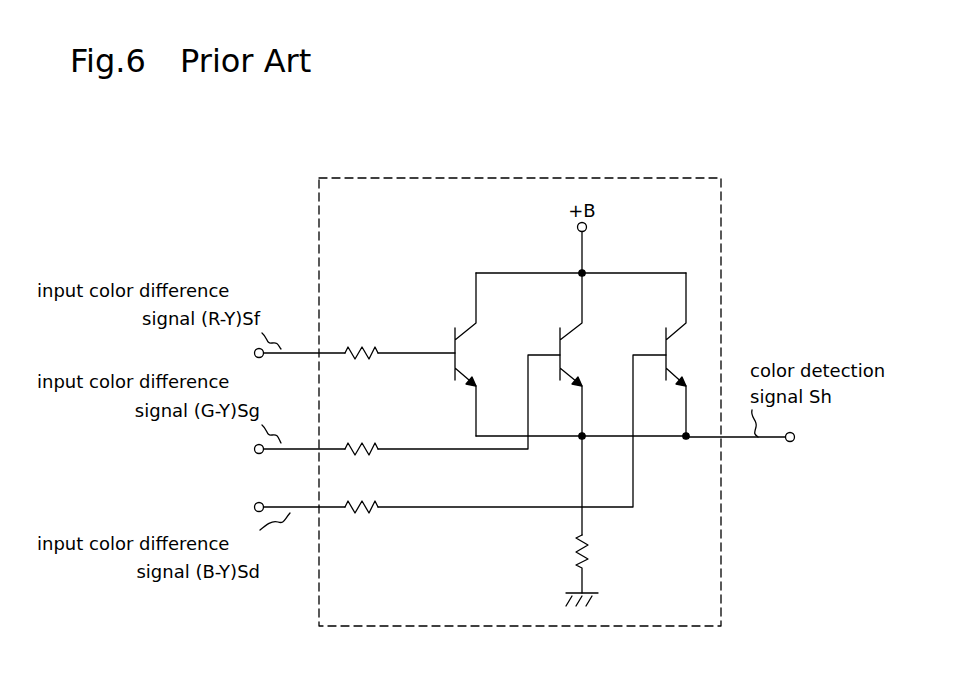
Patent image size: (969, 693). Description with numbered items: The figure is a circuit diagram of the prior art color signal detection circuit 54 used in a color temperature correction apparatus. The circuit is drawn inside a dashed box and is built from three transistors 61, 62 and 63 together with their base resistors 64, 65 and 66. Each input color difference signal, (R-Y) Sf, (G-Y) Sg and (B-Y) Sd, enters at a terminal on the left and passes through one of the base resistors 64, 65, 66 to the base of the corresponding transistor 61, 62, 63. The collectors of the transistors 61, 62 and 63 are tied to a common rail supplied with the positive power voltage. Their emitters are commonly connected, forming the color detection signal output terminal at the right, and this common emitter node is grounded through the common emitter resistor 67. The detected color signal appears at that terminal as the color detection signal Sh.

The color signal detection circuit 54 is at (378, 178).
The transistor 61 is at (464, 325).
The transistor 62 is at (570, 325).
The transistor 63 is at (675, 325).
The base resistor 64 is at (369, 343).
The base resistor 65 is at (369, 441).
The base resistor 66 is at (360, 516).
The common emitter resistor 67 is at (572, 553).